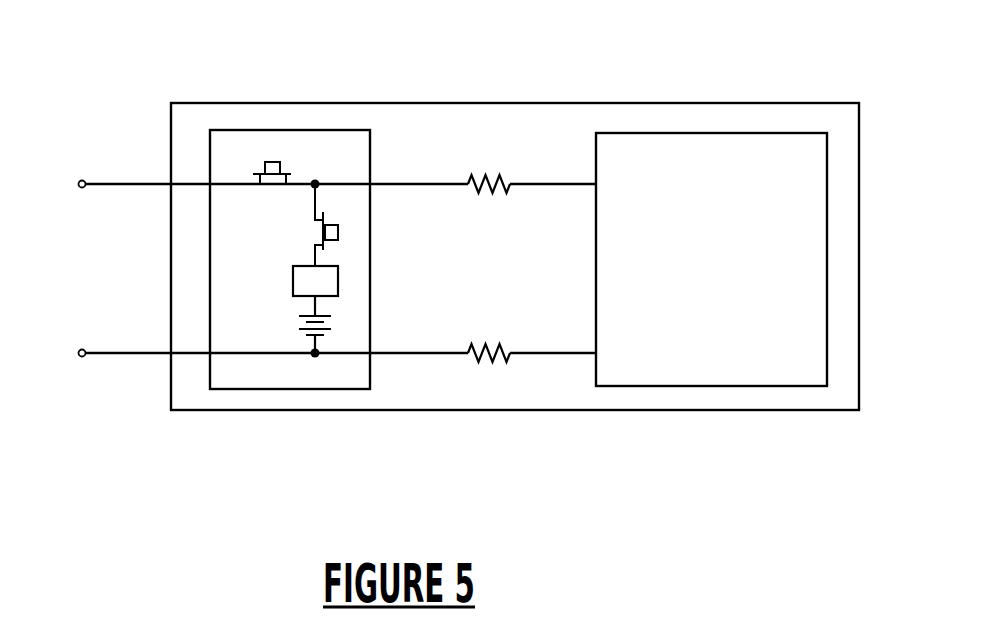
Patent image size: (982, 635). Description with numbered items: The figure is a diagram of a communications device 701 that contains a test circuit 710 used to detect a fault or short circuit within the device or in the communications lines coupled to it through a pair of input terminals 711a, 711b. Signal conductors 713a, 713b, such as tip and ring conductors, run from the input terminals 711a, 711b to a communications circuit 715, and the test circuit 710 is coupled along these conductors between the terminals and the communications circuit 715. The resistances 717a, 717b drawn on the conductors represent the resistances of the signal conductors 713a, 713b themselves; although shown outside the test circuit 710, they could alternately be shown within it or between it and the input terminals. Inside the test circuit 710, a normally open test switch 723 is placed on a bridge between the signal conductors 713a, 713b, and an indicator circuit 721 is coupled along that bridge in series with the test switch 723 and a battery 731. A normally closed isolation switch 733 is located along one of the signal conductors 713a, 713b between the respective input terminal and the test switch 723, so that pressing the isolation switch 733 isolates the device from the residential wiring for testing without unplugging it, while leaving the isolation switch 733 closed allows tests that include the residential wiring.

The communications device 701 is at (750, 410).
The test circuit 710 is at (238, 390).
The communications circuit 715 is at (633, 387).
The input terminal 711a is at (79, 355).
The input terminal 711b is at (79, 186).
The signal conductor 713a is at (120, 356).
The signal conductor 713b is at (120, 183).
The resistance 717a is at (503, 364).
The resistance 717b is at (490, 170).
The indicator circuit 721 is at (338, 272).
The test switch 723 is at (336, 227).
The battery 731 is at (312, 356).
The isolation switch 733 is at (272, 161).